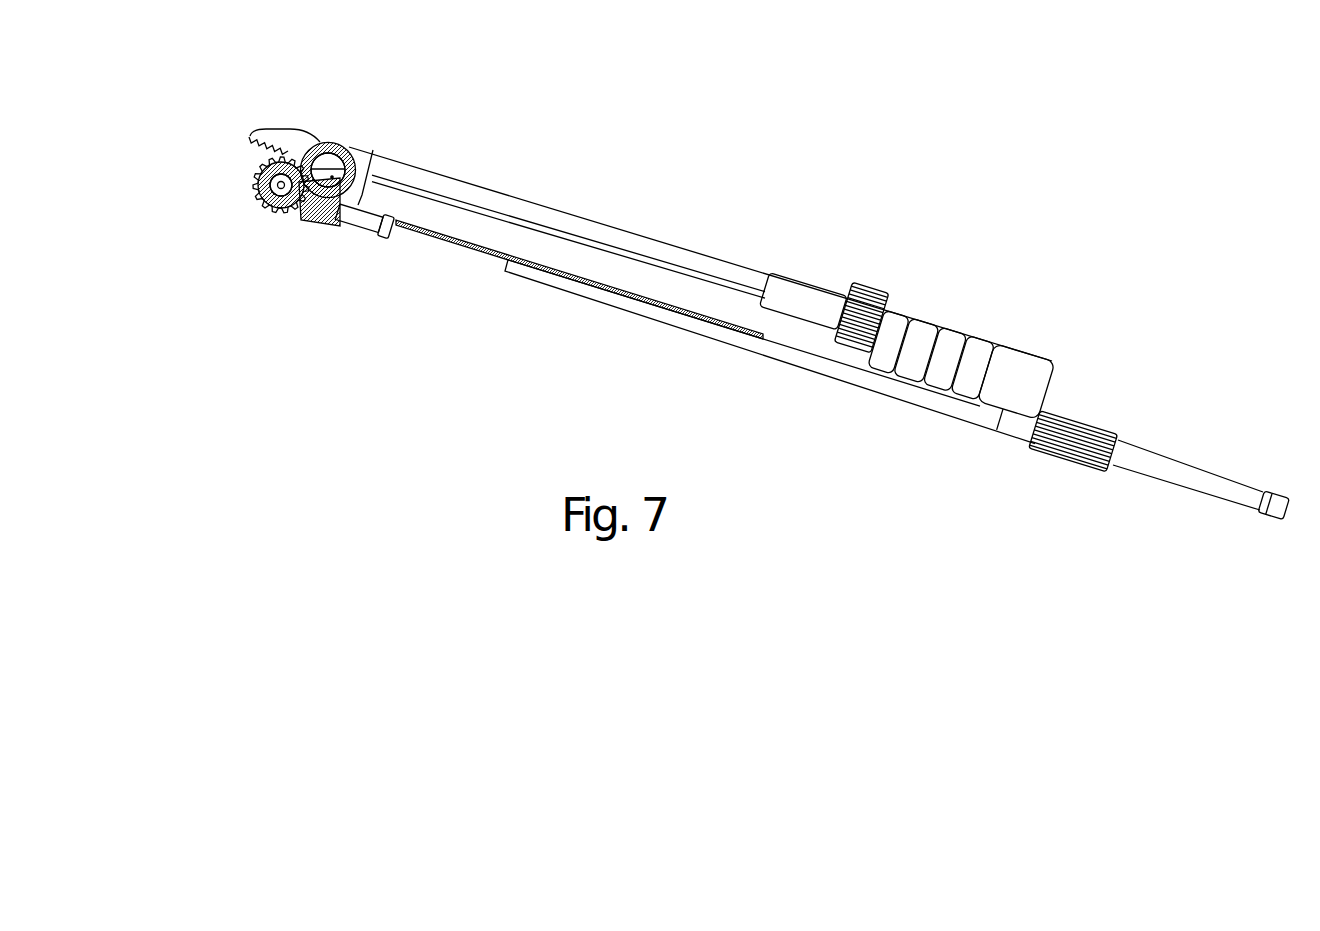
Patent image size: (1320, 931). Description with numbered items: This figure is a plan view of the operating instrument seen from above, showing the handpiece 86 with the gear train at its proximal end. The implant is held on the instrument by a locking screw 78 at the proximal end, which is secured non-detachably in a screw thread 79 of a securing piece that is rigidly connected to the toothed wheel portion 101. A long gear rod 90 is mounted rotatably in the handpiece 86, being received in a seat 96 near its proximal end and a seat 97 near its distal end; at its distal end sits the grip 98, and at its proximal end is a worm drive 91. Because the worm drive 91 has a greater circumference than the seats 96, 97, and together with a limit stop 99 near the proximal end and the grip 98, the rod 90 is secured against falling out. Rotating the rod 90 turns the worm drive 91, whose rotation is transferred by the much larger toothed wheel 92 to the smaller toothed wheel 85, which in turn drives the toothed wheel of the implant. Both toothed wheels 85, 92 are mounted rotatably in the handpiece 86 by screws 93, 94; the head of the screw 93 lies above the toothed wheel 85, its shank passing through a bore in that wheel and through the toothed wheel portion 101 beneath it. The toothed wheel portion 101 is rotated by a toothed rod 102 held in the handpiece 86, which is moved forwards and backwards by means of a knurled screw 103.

The locking screw 78 is at (290, 235).
The screw thread 79 is at (270, 215).
The toothed wheel 85 is at (260, 198).
The handpiece 86 is at (918, 330).
The gear rod 90 is at (657, 314).
The worm drive 91 is at (328, 226).
The toothed wheel 92 is at (358, 144).
The screw 93 is at (304, 218).
The screw 94 is at (328, 152).
The seat 96 is at (359, 232).
The seat 97 is at (1008, 420).
The grip 98 is at (1088, 432).
The limit stop 99 is at (391, 234).
The toothed wheel portion 101 is at (258, 163).
The toothed rod 102 is at (282, 140).
The knurled screw 103 is at (872, 284).